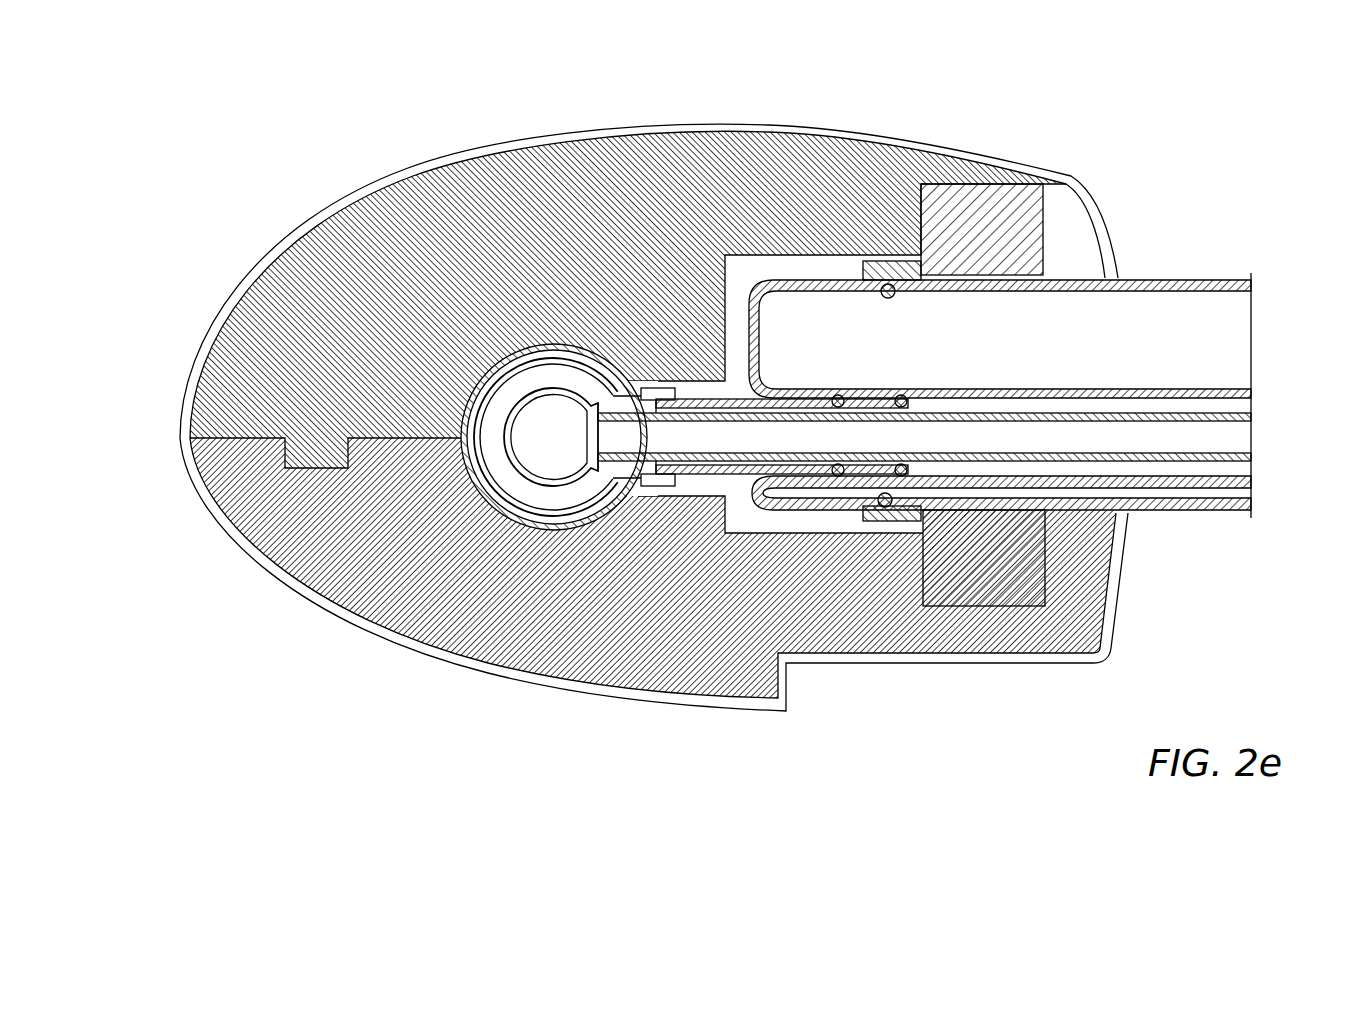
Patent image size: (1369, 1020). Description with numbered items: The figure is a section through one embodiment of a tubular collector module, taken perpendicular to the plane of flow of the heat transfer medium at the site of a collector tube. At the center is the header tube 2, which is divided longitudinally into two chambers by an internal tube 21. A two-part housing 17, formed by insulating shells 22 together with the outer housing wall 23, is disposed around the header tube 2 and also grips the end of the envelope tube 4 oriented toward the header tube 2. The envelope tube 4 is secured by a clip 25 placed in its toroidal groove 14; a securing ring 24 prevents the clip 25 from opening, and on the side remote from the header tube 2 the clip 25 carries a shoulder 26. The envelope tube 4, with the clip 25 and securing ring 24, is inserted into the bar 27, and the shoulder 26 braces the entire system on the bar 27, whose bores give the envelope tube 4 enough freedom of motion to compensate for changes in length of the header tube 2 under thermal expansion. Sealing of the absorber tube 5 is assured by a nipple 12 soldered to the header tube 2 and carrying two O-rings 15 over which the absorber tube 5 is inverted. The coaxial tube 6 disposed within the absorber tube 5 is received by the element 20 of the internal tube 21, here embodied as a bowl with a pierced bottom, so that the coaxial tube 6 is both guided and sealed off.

The header tube 2 is at (487, 533).
The envelope tube 4 is at (1248, 283).
The absorber tube 5 is at (1217, 380).
The coaxial tube 6 is at (1218, 413).
The nipple 12 is at (683, 480).
The toroidal groove 14 is at (867, 278).
The O-rings 15 is at (890, 385).
The housing 17 is at (290, 215).
The receiving element 20 is at (583, 390).
The internal tube 21 is at (578, 477).
The insulating shells 22 is at (237, 477).
The outer housing wall 23 is at (270, 583).
The securing ring 24 is at (855, 256).
The clip 25 is at (855, 505).
The shoulder 26 is at (882, 280).
The bar 27 is at (973, 580).